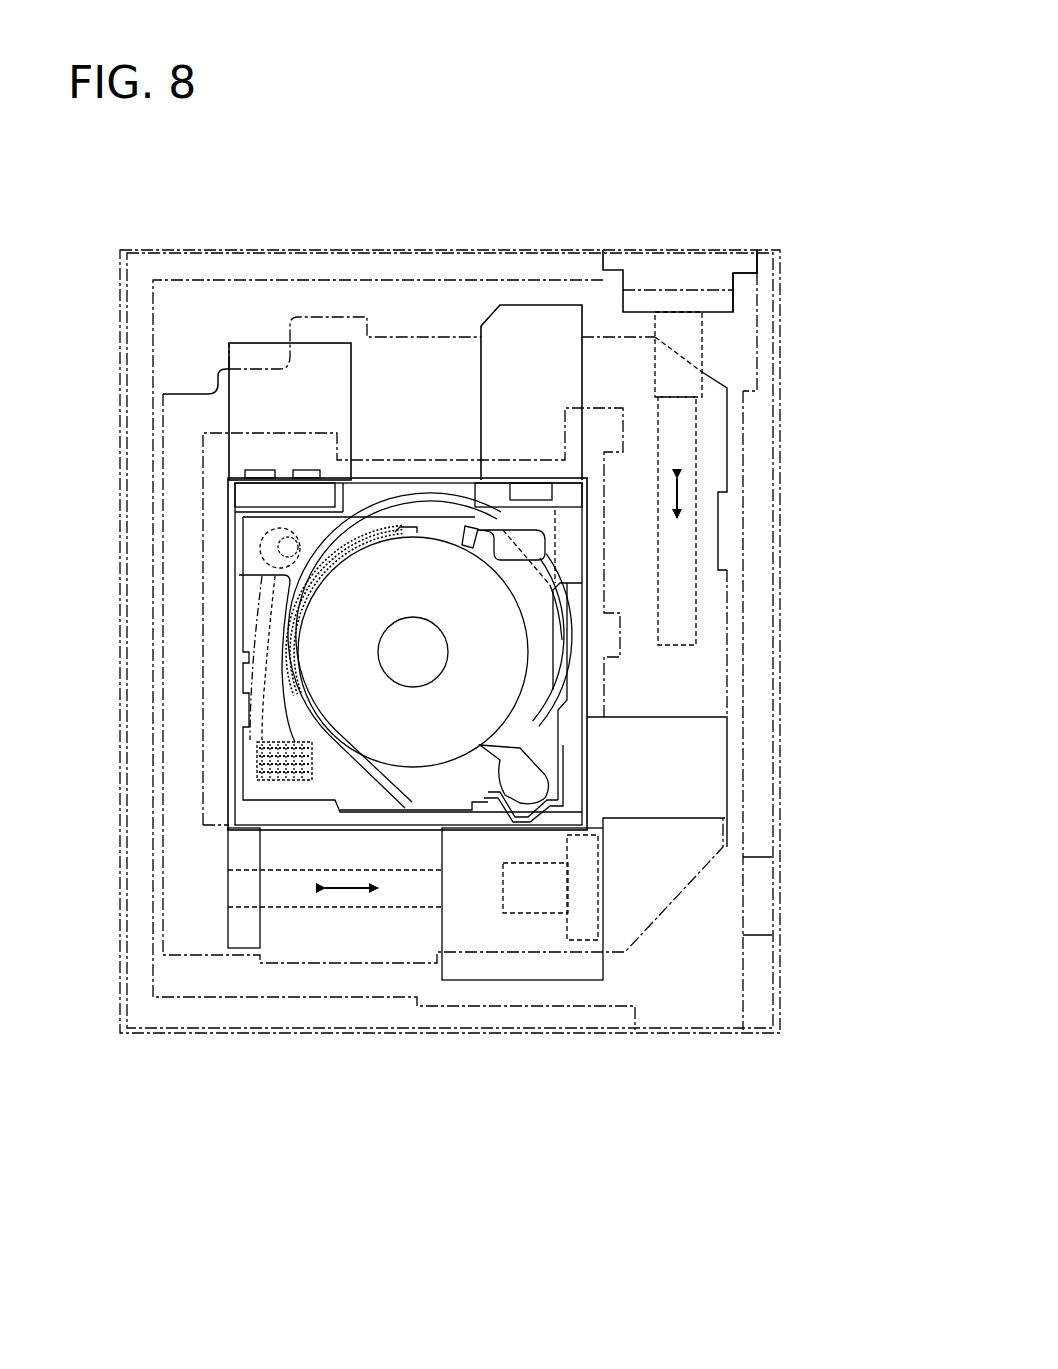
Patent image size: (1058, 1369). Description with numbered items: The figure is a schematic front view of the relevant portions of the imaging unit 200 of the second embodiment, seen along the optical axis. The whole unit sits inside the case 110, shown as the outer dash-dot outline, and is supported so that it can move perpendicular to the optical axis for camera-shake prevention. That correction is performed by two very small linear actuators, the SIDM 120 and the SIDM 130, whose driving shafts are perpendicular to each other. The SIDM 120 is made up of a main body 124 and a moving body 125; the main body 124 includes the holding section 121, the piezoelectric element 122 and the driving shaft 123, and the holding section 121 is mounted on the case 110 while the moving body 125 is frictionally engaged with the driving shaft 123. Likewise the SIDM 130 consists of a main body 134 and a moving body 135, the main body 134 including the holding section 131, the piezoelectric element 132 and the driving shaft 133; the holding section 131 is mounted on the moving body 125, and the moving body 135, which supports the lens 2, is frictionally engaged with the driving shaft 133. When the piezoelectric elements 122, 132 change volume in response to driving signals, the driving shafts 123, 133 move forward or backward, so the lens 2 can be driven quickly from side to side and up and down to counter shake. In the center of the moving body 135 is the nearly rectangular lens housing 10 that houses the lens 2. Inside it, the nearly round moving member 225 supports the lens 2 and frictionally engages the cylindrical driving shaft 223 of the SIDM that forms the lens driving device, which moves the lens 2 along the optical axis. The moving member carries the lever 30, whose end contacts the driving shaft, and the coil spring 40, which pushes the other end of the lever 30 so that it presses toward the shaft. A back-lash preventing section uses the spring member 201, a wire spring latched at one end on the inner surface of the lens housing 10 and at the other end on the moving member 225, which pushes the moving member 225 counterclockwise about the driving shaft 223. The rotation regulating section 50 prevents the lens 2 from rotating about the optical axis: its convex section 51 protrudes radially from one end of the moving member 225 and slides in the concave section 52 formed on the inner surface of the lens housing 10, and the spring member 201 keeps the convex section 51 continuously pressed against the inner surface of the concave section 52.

The imaging unit 200 is at (531, 171).
The case 110 is at (215, 249).
The SIDM 120 is at (918, 268).
The holding section 121 is at (727, 302).
The piezoelectric element 122 is at (697, 345).
The driving shaft 123 is at (693, 412).
The main body 124 is at (863, 210).
The moving body 125 is at (708, 512).
The spring member 201 is at (322, 808).
The lens 2 is at (432, 648).
The lens housing 10 is at (575, 634).
The moving member 225 is at (502, 685).
The driving shaft 223 is at (272, 548).
The lever 30 is at (256, 705).
The coil spring 40 is at (262, 787).
The rotation regulating section 50 is at (868, 713).
The convex section 51 is at (528, 777).
The concave section 52 is at (545, 792).
The SIDM 130 is at (515, 1172).
The holding section 131 is at (585, 925).
The piezoelectric element 132 is at (540, 905).
The driving shaft 133 is at (320, 900).
The main body 134 is at (580, 1125).
The moving body 135 is at (243, 942).